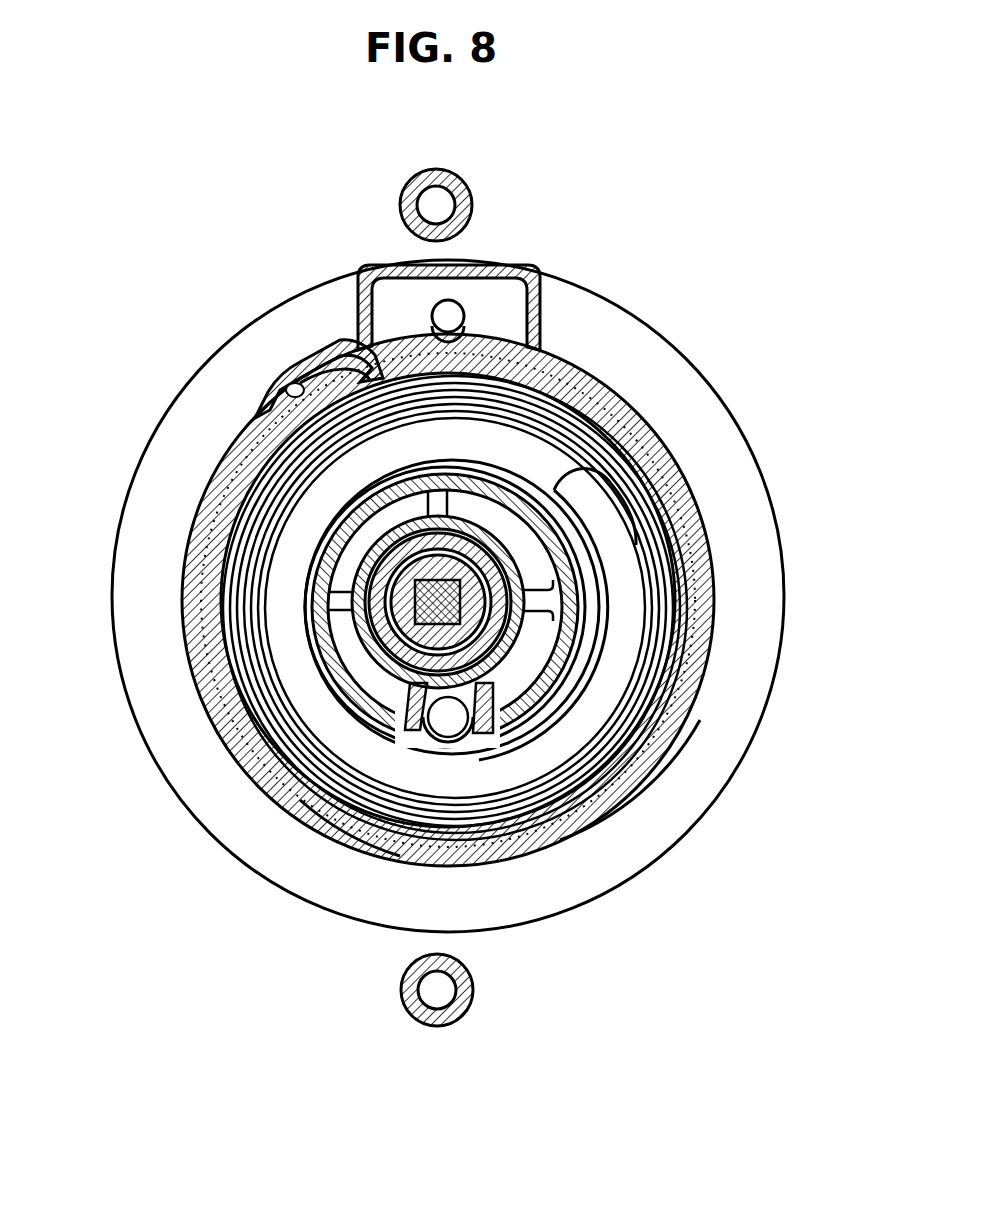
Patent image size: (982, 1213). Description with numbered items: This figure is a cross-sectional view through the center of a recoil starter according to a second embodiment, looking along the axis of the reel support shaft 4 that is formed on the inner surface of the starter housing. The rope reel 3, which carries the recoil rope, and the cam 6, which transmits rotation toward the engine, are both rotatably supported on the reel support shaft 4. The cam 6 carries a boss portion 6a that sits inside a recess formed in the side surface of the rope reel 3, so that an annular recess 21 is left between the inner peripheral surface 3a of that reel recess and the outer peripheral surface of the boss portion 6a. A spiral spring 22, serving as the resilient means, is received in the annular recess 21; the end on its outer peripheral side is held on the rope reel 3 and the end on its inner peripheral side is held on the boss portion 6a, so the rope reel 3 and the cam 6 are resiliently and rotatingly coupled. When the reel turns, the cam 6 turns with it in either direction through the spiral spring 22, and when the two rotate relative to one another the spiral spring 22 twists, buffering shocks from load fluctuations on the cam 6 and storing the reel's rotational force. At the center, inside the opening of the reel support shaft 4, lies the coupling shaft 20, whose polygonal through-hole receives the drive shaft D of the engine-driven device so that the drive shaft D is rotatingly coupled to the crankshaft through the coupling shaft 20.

The rope reel 3 is at (282, 810).
The inner peripheral surface 3a is at (587, 777).
The reel support shaft 4 is at (370, 630).
The cam 6 is at (330, 540).
The boss portion 6a is at (647, 487).
The coupling shaft 20 is at (520, 574).
The annular recess 21 is at (482, 458).
The spiral spring 22 is at (363, 838).
The drive shaft D is at (480, 650).